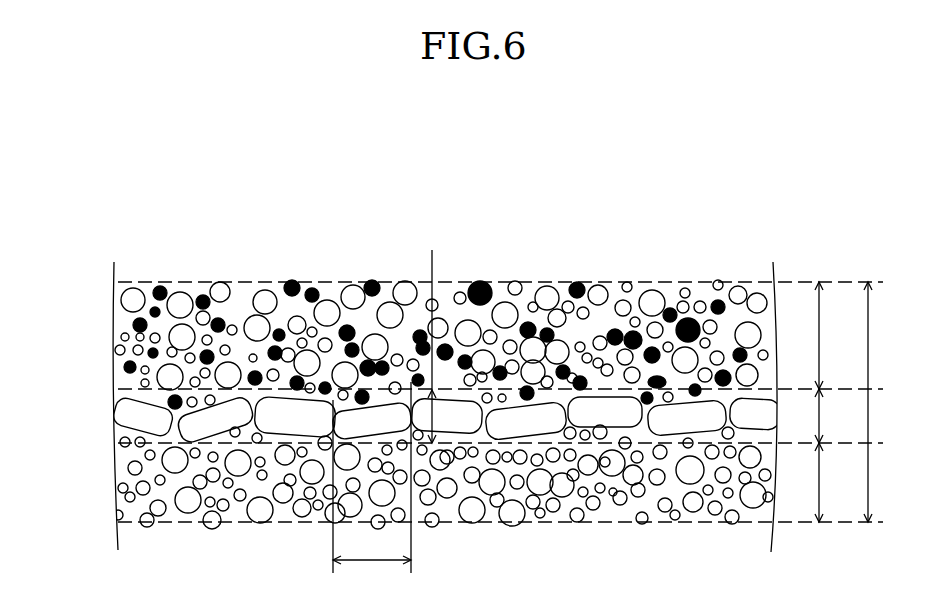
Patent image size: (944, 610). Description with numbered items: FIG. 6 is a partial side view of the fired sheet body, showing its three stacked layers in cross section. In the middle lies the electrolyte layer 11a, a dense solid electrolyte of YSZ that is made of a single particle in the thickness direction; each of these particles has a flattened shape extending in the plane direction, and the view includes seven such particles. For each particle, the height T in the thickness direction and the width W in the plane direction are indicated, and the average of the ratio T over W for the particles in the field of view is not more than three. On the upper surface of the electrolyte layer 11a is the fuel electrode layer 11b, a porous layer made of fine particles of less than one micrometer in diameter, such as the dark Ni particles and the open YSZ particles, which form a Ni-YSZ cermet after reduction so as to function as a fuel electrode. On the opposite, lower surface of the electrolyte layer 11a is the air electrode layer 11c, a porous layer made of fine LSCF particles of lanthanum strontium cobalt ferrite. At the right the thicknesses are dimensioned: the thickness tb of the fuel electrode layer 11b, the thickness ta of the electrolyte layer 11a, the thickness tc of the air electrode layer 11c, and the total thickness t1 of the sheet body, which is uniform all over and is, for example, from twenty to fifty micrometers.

The electrolyte layer 11a is at (120, 414).
The fuel electrode layer 11b is at (401, 311).
The air electrode layer 11c is at (405, 503).
The YSZ particle YSZ is at (270, 290).
The Ni particle Ni is at (314, 282).
The LSCF particle LSCF is at (186, 510).
The height of the particle T is at (465, 250).
The width of the particle W is at (372, 477).
The thickness of the fuel electrode layer tb is at (831, 335).
The thickness of the electrolyte layer ta is at (830, 416).
The thickness of the air electrode layer tc is at (830, 482).
The thickness of the sheet body t1 is at (879, 402).